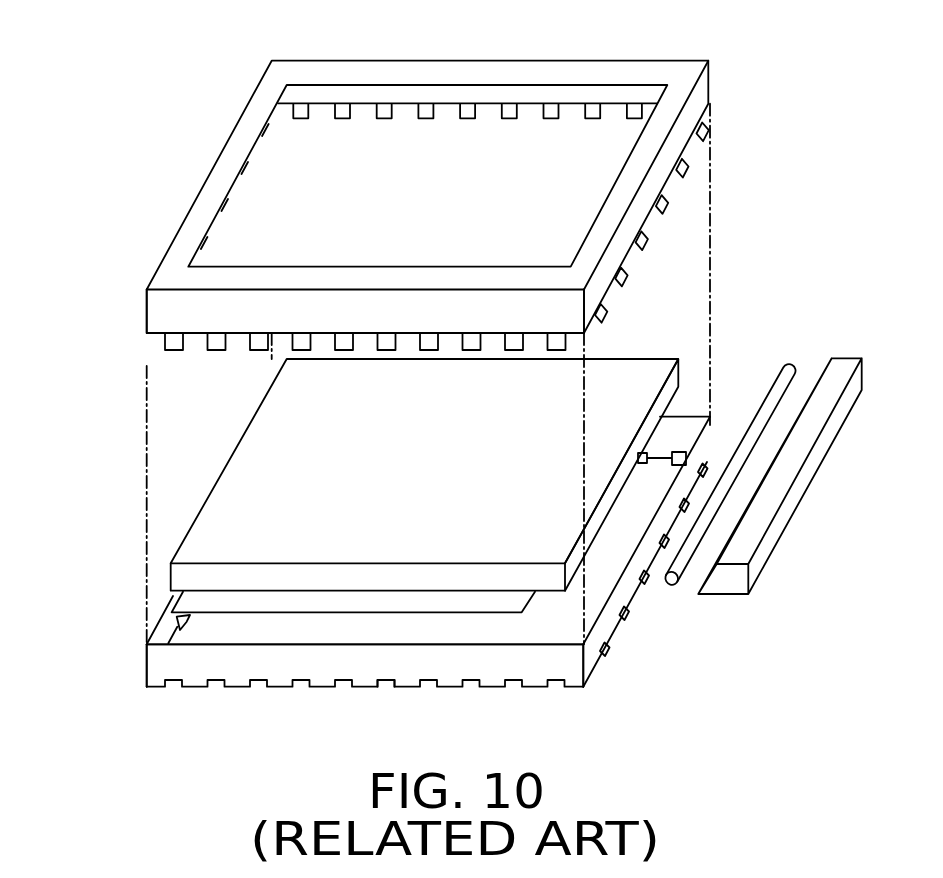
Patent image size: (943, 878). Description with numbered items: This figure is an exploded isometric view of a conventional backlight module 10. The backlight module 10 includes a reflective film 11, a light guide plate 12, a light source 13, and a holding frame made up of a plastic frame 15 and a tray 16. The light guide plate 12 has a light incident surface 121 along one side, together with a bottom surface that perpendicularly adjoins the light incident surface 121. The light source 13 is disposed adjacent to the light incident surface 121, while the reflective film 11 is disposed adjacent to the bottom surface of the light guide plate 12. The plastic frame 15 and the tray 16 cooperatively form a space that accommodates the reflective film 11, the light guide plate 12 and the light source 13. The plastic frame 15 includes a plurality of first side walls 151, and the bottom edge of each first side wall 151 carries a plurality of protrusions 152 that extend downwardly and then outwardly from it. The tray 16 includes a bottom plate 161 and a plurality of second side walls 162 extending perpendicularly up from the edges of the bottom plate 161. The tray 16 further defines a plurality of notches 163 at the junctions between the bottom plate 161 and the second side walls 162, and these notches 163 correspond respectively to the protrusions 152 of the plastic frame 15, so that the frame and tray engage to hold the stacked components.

The backlight module 10 is at (467, 30).
The reflective film 11 is at (237, 600).
The light guide plate 12 is at (428, 509).
The light incident surface 121 is at (600, 523).
The light source 13 is at (758, 597).
The plastic frame 15 is at (384, 211).
The first side wall 151 is at (163, 316).
The protrusion 152 is at (167, 341).
The tray 16 is at (428, 591).
The bottom plate 161 is at (302, 632).
The second side wall 162 is at (500, 667).
The notch 163 is at (388, 688).